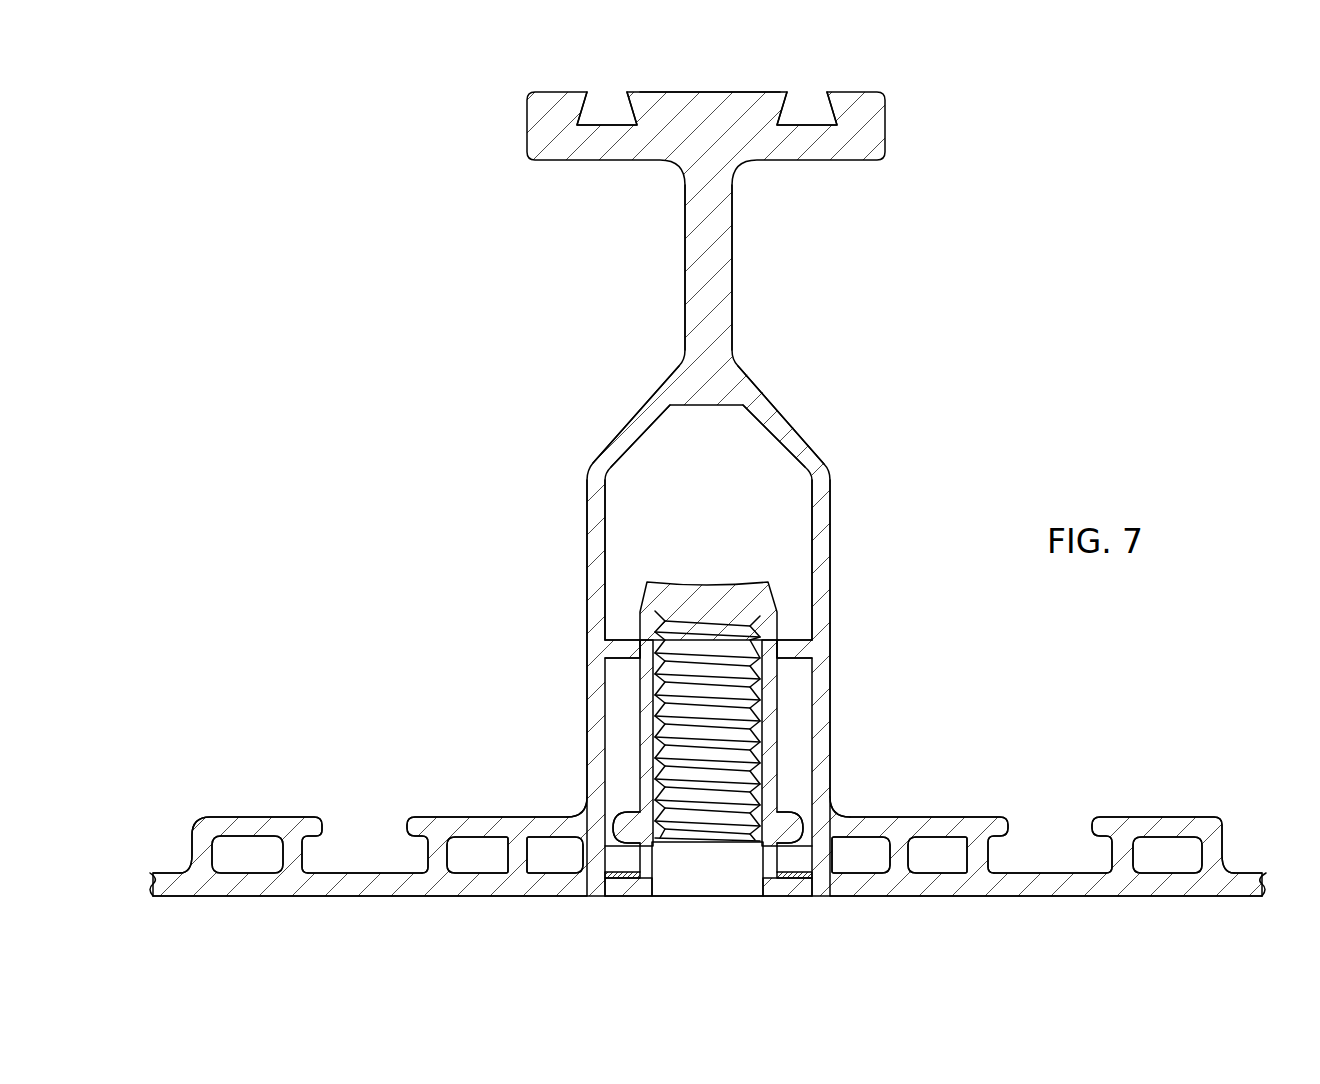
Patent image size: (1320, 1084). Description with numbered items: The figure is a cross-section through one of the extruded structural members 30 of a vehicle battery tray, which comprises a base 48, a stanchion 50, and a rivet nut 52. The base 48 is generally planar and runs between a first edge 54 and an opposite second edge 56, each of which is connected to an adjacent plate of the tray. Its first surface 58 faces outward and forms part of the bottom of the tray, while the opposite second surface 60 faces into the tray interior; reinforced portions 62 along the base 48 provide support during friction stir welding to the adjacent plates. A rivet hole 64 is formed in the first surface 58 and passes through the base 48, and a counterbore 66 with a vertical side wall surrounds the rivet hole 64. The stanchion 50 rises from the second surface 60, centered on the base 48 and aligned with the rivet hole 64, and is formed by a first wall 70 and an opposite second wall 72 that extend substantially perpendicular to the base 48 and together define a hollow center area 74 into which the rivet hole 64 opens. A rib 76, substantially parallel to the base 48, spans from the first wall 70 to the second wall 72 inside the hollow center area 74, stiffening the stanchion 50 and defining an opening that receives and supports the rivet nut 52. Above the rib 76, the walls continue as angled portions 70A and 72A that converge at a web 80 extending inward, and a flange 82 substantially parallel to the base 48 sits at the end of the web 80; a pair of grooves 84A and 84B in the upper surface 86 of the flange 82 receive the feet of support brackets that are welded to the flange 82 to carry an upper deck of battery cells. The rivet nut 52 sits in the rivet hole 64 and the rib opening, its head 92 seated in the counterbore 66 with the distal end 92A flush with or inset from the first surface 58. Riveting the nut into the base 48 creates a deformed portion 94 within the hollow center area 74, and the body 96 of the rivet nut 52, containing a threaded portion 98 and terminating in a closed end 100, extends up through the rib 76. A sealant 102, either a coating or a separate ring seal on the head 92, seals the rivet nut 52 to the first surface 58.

The structural member 30 is at (997, 435).
The base 48 is at (1047, 873).
The stanchion 50 is at (826, 598).
The rivet nut 52 is at (716, 582).
The first edge 54 is at (147, 875).
The second edge 56 is at (1269, 875).
The first surface 58 is at (409, 906).
The second surface 60 is at (378, 860).
The reinforced portions 62 is at (258, 816).
The rivet hole 64 is at (775, 861).
The counterbore 66 is at (808, 884).
The first wall 70 is at (592, 515).
The angled portion 70A is at (628, 420).
The second wall 72 is at (831, 550).
The angled portion 72A is at (796, 421).
The hollow center area 74 is at (748, 477).
The rib 76 is at (797, 640).
The web 80 is at (690, 296).
The flange 82 is at (886, 120).
The groove 84A is at (612, 124).
The groove 84B is at (810, 124).
The upper surface 86 is at (698, 84).
The head 92 is at (616, 886).
The distal end 92A is at (633, 896).
The deformed portion 94 is at (626, 813).
The body 96 is at (776, 690).
The threaded portion 98 is at (734, 727).
The closed end 100 is at (698, 582).
The sealant 102 is at (790, 860).